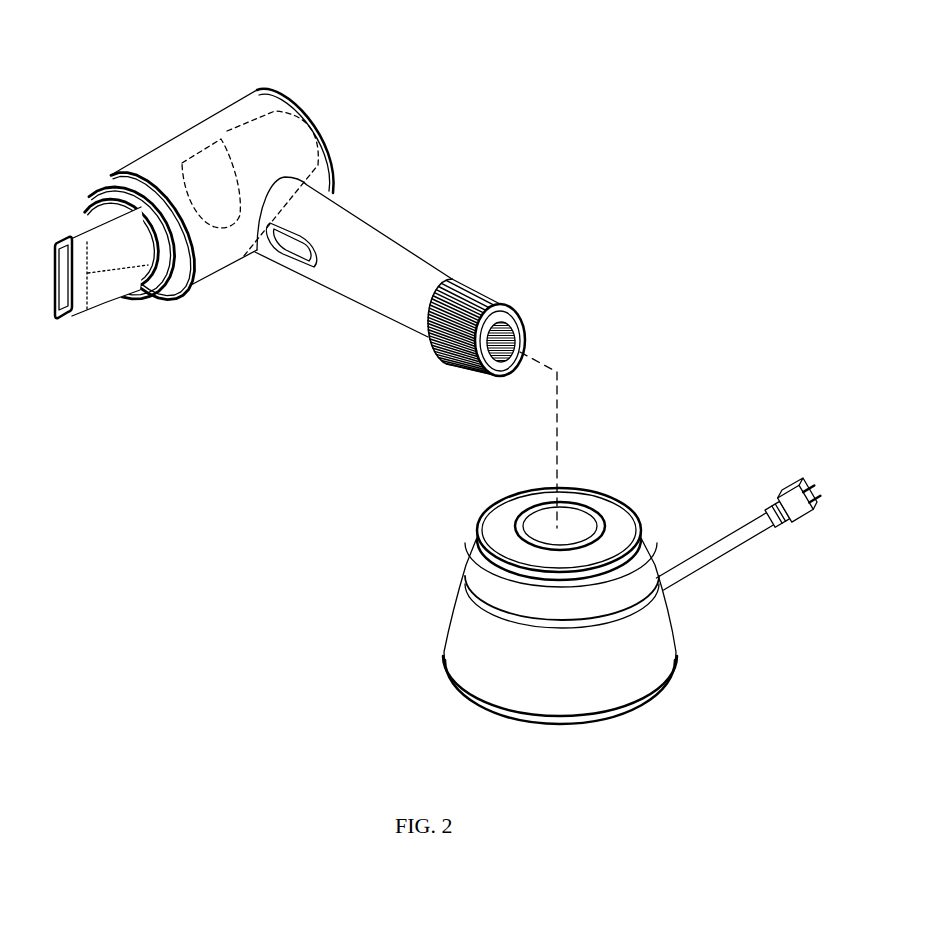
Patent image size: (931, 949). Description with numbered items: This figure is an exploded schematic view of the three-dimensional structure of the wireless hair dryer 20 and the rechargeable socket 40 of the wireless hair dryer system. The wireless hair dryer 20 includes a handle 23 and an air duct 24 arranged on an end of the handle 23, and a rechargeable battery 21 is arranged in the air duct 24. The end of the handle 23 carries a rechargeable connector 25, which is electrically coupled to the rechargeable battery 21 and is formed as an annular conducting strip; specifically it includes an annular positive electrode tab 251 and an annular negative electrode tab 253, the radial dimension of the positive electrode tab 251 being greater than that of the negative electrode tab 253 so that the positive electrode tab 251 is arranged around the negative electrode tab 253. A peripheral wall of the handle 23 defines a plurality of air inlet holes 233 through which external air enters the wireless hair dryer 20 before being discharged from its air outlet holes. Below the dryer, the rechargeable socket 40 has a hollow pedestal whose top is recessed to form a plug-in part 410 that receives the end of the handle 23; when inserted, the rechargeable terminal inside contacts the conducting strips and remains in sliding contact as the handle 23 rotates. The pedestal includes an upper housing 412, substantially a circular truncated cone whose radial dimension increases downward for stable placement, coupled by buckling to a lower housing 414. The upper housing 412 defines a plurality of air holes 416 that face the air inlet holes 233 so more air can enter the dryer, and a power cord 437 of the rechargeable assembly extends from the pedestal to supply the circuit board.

The wireless hair dryer 20 is at (154, 123).
The rechargeable battery 21 is at (232, 142).
The handle 23 is at (393, 250).
The air duct 24 is at (253, 97).
The rechargeable connector 25 is at (597, 281).
The air inlet holes 233 is at (447, 347).
The positive electrode tab 251 is at (524, 337).
The negative electrode tab 253 is at (522, 315).
The rechargeable socket 40 is at (455, 515).
The plug-in part 410 is at (582, 503).
The upper housing 412 is at (650, 631).
The lower housing 414 is at (623, 717).
The air holes 416 is at (542, 543).
The power cord 437 is at (712, 553).